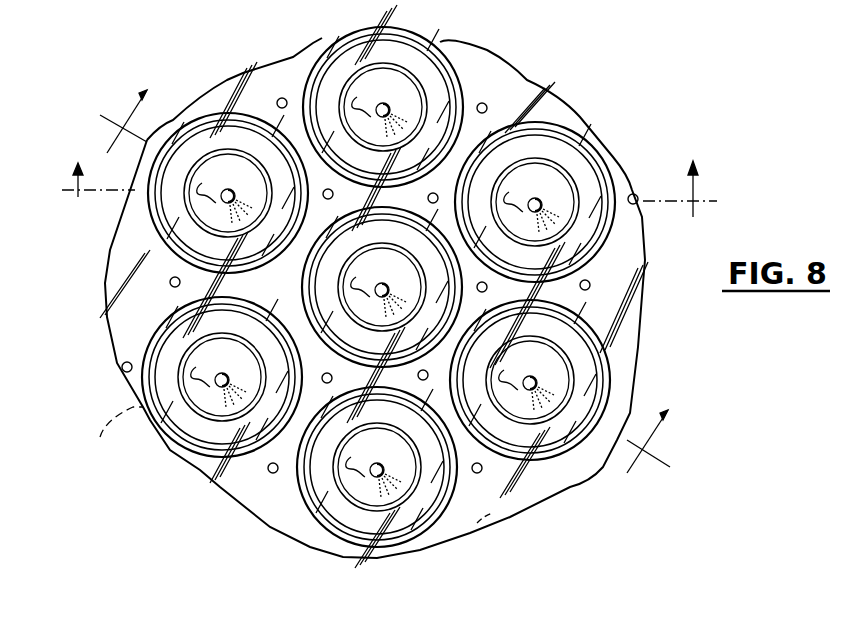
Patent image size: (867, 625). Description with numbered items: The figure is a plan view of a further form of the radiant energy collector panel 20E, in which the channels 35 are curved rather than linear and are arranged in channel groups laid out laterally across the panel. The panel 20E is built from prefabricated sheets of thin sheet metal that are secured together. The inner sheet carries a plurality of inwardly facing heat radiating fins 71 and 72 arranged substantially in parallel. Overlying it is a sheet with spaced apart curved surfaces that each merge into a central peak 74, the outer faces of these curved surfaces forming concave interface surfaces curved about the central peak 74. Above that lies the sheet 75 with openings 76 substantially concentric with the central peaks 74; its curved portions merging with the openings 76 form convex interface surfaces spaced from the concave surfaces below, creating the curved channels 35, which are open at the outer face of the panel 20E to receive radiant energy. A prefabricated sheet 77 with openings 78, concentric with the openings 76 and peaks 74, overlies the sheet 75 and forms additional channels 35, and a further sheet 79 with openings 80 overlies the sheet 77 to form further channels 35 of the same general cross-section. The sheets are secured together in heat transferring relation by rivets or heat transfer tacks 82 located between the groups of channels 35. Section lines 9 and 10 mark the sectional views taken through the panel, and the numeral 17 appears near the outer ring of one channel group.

The section line 9- 9 is at (381, 189).
The section line 10- 10 is at (383, 281).
The outer ring 17 is at (486, 30).
The radiant energy collector panel 20E is at (665, 103).
The channels 35 is at (392, 191).
The heat radiating fin 71 is at (361, 323).
The heat radiating fin 72 is at (350, 303).
The central peak 74 is at (372, 284).
The sheet 75 is at (187, 220).
The openings 76 is at (190, 203).
The prefabricated sheet 77 is at (185, 118).
The openings 78 is at (243, 95).
The sheet 79 is at (640, 285).
The openings 80 is at (343, 50).
The heat transfer tacks 82 is at (380, 275).